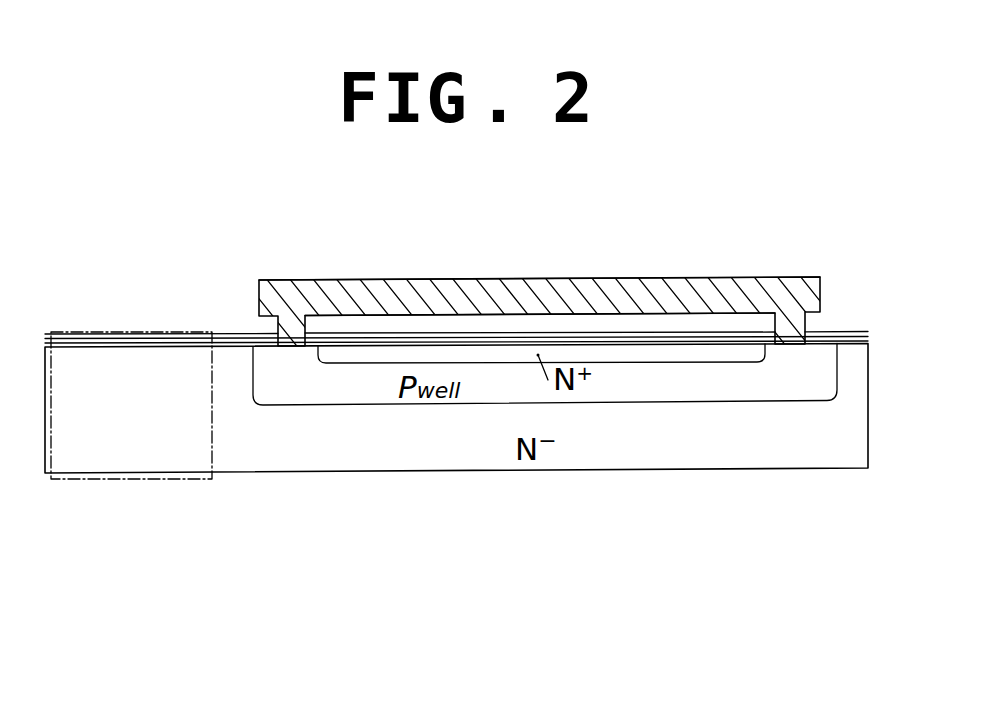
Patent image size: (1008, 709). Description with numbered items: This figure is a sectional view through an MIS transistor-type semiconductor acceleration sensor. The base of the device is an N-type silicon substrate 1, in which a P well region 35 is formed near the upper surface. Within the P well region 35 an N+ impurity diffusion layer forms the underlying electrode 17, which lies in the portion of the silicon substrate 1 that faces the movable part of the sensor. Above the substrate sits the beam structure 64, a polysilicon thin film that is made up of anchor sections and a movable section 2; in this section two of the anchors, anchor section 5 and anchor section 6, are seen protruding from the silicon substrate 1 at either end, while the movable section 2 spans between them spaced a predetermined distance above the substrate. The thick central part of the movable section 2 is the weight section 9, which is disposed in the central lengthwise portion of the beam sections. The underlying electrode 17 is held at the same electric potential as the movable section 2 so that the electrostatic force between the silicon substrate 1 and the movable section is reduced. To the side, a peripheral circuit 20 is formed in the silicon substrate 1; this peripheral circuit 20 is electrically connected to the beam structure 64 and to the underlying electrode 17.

The silicon substrate 1 is at (853, 397).
The movable section 2 is at (721, 278).
The anchor section 5 is at (310, 323).
The anchor section 6 is at (806, 325).
The weight section 9 is at (586, 287).
The underlying electrode 17 is at (688, 355).
The peripheral circuit 20 is at (212, 415).
The P well region 35 is at (670, 392).
The beam structure 64 is at (447, 277).